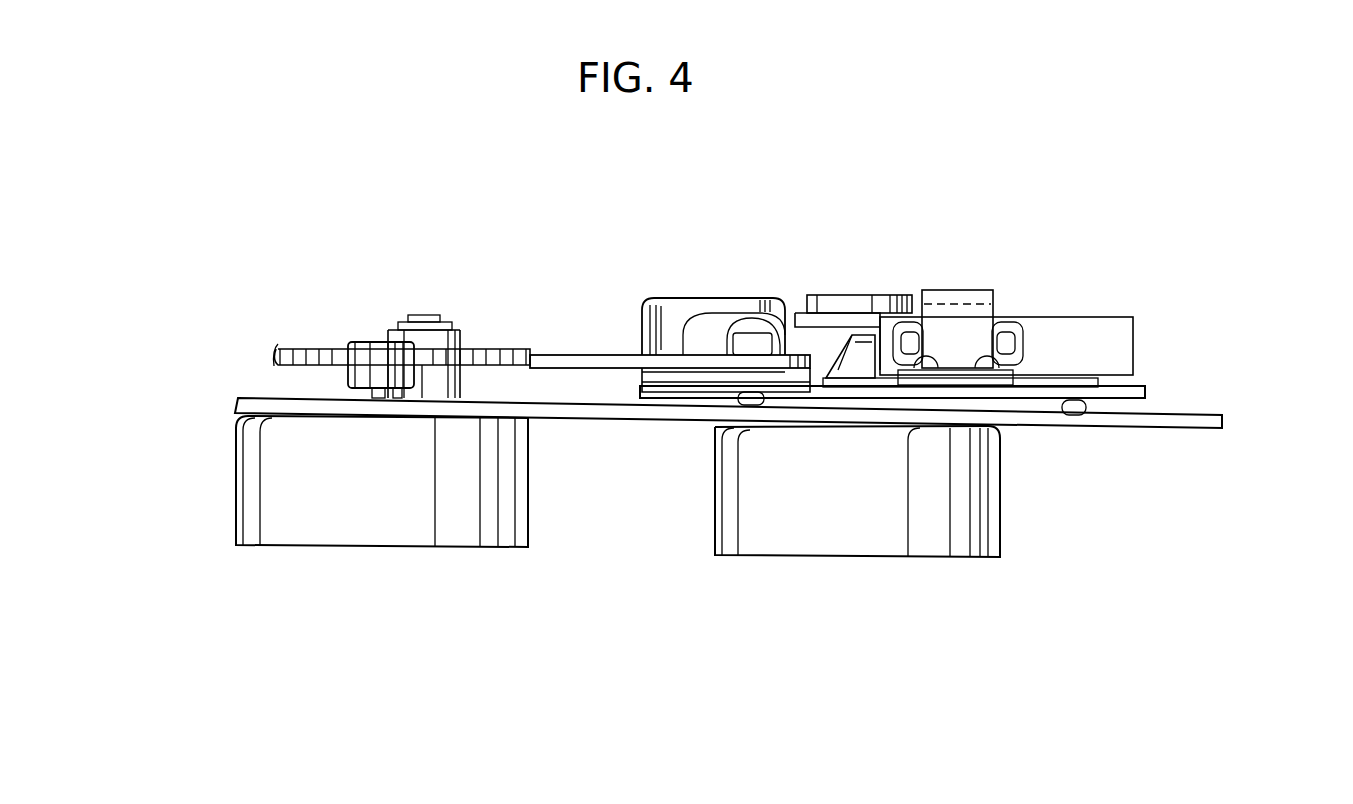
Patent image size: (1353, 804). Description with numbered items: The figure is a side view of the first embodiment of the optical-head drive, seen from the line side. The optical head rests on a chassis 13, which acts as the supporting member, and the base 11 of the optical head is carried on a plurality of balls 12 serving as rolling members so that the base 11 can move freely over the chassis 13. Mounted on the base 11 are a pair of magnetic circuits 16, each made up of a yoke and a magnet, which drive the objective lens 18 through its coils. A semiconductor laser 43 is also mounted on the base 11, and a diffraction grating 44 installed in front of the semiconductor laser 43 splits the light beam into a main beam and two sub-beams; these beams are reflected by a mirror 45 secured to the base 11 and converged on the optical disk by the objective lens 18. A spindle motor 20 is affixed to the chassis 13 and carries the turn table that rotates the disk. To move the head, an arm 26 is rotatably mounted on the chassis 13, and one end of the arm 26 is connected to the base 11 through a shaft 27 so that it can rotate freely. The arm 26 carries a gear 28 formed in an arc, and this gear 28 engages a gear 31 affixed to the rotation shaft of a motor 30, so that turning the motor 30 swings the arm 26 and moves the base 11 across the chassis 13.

The base 11 is at (1146, 393).
The balls 12 is at (1086, 406).
The chassis 13 is at (1224, 421).
The magnetic circuits 16 is at (958, 300).
The objective lens 18 is at (830, 300).
The spindle motor 20 is at (1002, 514).
The arm 26 is at (578, 352).
The shaft 27 is at (760, 404).
The gear 28 is at (308, 345).
The motor 30 is at (248, 482).
The gear 31 is at (366, 340).
The semiconductor laser 43 is at (700, 335).
The diffraction grating 44 is at (757, 345).
The mirror 45 is at (846, 338).